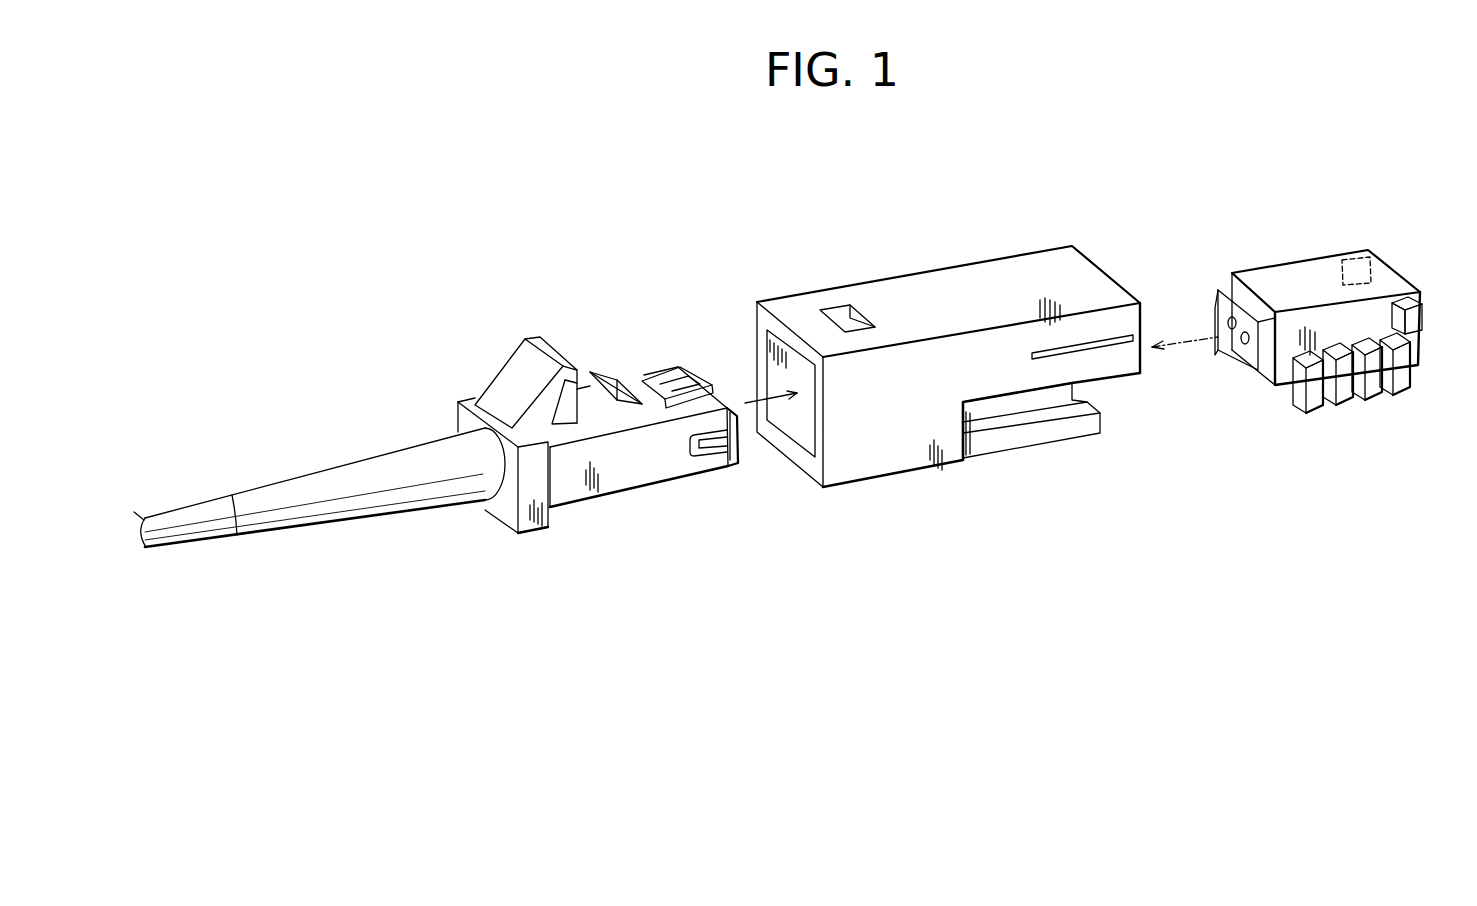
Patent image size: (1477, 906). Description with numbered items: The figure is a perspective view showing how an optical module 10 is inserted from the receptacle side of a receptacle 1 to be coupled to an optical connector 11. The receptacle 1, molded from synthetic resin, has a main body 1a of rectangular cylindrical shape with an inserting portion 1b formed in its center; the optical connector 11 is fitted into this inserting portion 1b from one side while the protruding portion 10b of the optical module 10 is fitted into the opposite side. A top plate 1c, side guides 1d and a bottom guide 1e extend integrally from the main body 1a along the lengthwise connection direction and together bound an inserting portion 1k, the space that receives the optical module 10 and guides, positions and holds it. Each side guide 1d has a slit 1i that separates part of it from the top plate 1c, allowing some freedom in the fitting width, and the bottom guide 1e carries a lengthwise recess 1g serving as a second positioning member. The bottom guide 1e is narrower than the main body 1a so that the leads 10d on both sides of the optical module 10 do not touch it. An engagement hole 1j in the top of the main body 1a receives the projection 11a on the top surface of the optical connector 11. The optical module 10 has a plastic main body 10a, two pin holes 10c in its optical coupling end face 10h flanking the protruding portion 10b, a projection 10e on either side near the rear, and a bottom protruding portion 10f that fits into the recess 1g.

The receptacle 1 is at (945, 345).
The main body 1a is at (872, 448).
The inserting portion 1b is at (787, 422).
The top plate 1c is at (1040, 270).
The side guides 1d is at (1110, 357).
The bottom guide 1e is at (1015, 437).
The recess 1g is at (1047, 403).
The slit 1i is at (1122, 330).
The engagement hole 1j is at (837, 308).
The inserting portion 1k is at (987, 407).
The optical module 10 is at (1308, 312).
The main body 10a is at (1278, 280).
The protruding portion 10b is at (1267, 362).
The pin holes 10c is at (1240, 297).
The leads 10d is at (1400, 403).
The projection 10e is at (1353, 255).
The protruding portion 10f is at (1250, 375).
The optical coupling end face 10h is at (1232, 355).
The optical connector 11 is at (614, 500).
The projection 11a is at (607, 368).